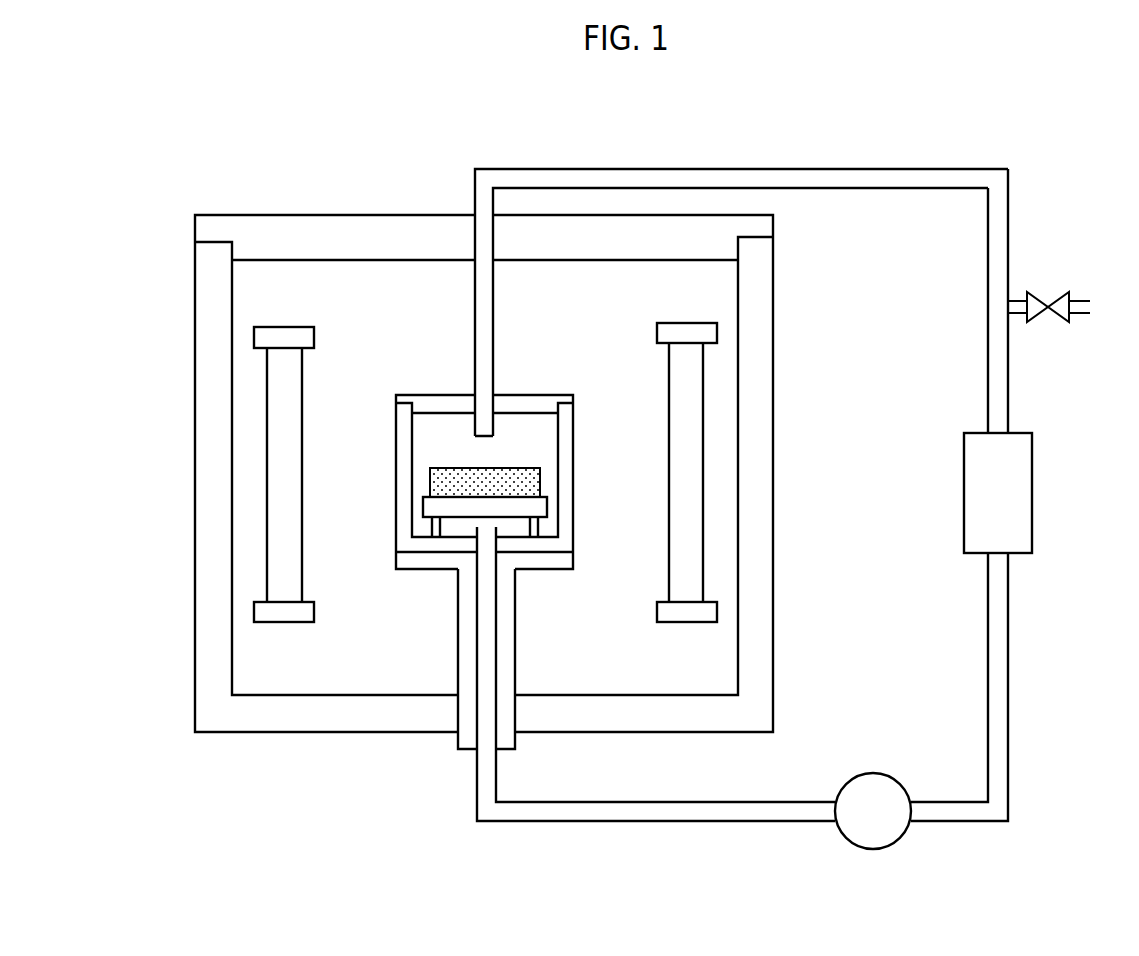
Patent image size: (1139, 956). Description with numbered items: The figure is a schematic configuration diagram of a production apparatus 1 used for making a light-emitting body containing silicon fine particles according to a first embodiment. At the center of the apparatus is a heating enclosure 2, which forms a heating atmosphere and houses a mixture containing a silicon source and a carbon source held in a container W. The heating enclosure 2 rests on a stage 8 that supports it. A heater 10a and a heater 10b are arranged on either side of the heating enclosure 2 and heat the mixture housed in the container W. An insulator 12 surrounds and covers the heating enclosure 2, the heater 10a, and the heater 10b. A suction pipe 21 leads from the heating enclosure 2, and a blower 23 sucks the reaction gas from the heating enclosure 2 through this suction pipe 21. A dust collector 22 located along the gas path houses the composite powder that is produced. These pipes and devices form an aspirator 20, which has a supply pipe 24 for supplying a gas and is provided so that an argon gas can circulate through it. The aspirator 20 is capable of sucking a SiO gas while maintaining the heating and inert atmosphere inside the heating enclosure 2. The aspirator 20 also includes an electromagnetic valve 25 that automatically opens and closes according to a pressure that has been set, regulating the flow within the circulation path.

The production apparatus 1 is at (1073, 163).
The heating enclosure 2 is at (384, 387).
The stage 8 is at (540, 560).
The heater 10a is at (286, 538).
The heater 10b is at (683, 402).
The insulator 12 is at (172, 215).
The aspirator 20 is at (1000, 244).
The suction pipe 21 is at (594, 174).
The dust collector 22 is at (1020, 490).
The blower 23 is at (878, 790).
The supply pipe 24 is at (552, 820).
The electromagnetic valve 25 is at (1036, 316).
The container W is at (524, 484).